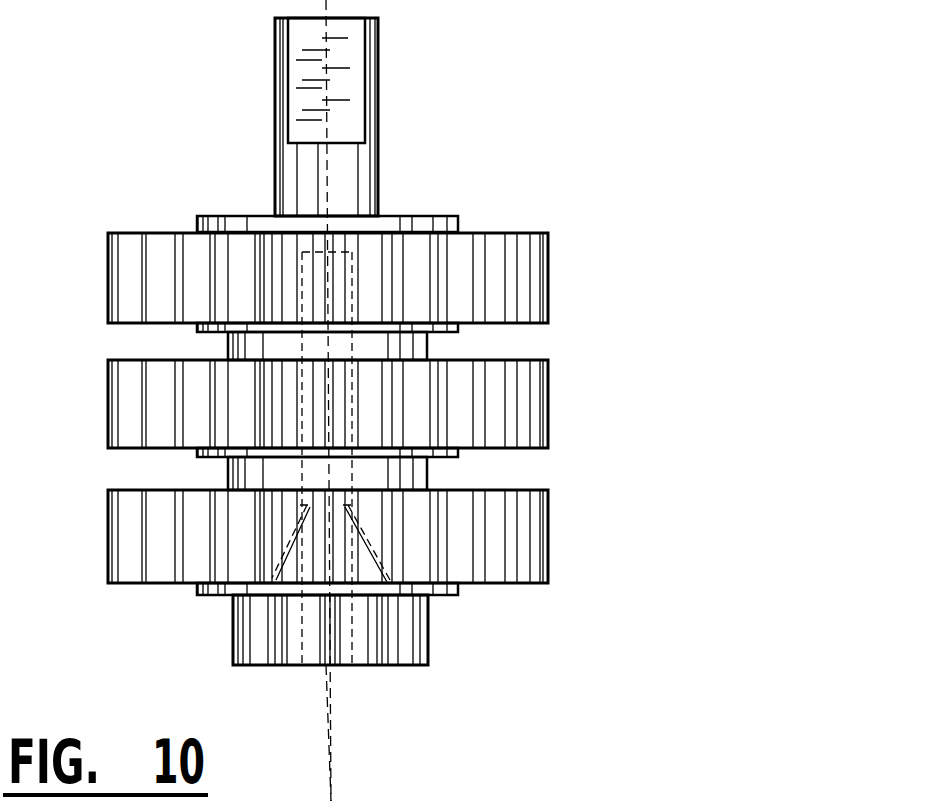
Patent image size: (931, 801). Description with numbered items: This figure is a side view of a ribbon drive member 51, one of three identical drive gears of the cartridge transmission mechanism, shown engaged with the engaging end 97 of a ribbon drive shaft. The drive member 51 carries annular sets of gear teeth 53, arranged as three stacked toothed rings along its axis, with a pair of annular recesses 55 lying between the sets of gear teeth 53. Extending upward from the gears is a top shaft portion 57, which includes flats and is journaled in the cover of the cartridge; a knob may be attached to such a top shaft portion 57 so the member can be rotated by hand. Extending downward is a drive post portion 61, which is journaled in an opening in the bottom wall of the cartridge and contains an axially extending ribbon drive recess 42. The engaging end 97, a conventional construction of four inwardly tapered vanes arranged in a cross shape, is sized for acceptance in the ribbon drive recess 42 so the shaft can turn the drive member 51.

The ribbon drive member 51 is at (706, 379).
The annular sets of gear teeth 53 is at (549, 278).
The annular recesses 55 is at (552, 342).
The top shaft portion 57 is at (380, 88).
The drive post portion 61 is at (430, 623).
The engaging end 97 is at (287, 630).
The ribbon drive recess 42 is at (394, 700).